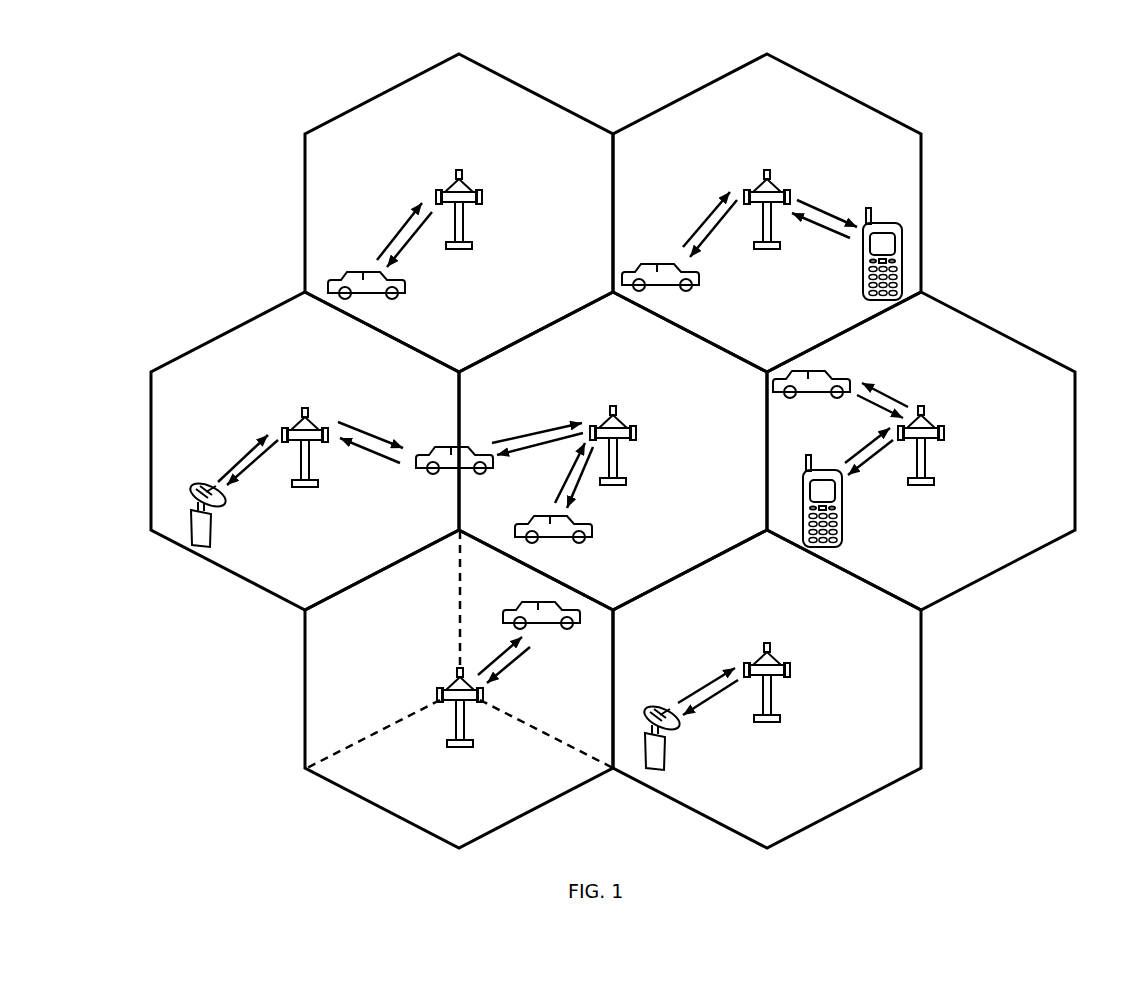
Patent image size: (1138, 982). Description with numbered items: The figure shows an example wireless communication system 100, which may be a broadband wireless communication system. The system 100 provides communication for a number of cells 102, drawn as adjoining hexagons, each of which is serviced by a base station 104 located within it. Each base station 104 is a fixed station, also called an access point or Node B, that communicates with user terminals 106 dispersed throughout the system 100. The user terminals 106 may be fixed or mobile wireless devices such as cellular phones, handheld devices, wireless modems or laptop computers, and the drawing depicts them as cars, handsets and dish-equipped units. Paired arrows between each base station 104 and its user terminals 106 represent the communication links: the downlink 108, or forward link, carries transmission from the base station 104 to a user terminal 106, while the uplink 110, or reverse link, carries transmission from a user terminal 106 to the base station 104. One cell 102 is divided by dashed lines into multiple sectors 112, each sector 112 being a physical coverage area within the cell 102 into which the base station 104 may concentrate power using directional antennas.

The wireless communication system 100 is at (1058, 136).
The cell 102 is at (392, 87).
The base station 104 is at (459, 171).
The user terminal 106 is at (405, 293).
The downlink 108 is at (405, 242).
The uplink 110 is at (392, 228).
The sector 112 is at (513, 805).